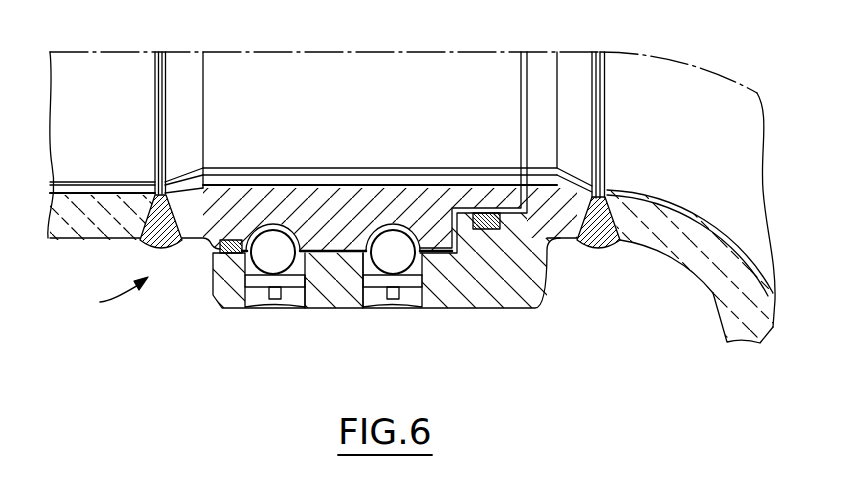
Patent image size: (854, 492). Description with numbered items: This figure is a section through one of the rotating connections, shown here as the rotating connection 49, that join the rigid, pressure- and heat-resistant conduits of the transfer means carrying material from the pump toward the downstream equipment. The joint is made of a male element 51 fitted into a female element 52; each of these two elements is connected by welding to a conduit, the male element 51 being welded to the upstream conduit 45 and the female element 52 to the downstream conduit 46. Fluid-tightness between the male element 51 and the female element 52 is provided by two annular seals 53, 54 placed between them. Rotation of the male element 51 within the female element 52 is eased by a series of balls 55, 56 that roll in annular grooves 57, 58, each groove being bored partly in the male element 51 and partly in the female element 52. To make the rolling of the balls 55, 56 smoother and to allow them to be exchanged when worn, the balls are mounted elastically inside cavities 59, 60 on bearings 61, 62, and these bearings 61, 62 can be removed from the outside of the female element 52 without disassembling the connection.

The upstream conduit 45 is at (665, 87).
The downstream conduit 46 is at (107, 72).
The rotating connection 49 is at (107, 295).
The male element 51 is at (390, 82).
The female element 52 is at (526, 287).
The annular seal 53 is at (483, 229).
The annular seal 54 is at (218, 253).
The ball 55 is at (408, 280).
The ball 56 is at (322, 300).
The annular groove 57 is at (433, 247).
The annular groove 58 is at (296, 261).
The cavity 59 is at (373, 300).
The cavity 60 is at (258, 297).
The bearing 61 is at (408, 262).
The bearing 62 is at (240, 260).